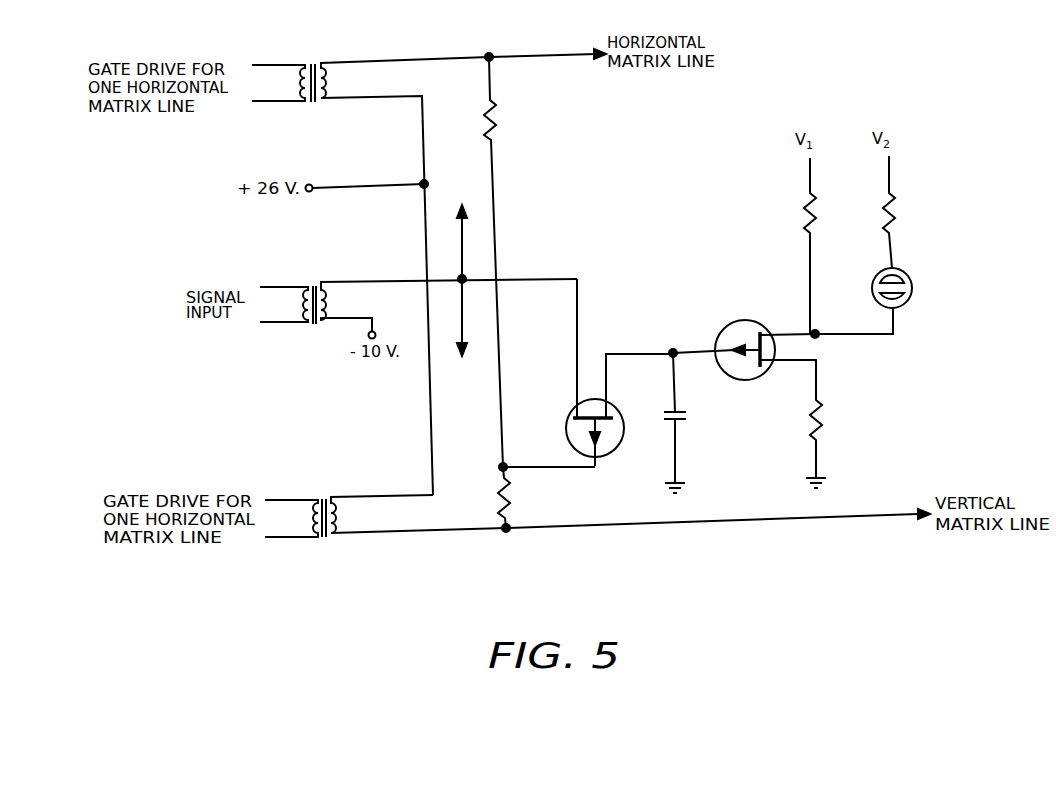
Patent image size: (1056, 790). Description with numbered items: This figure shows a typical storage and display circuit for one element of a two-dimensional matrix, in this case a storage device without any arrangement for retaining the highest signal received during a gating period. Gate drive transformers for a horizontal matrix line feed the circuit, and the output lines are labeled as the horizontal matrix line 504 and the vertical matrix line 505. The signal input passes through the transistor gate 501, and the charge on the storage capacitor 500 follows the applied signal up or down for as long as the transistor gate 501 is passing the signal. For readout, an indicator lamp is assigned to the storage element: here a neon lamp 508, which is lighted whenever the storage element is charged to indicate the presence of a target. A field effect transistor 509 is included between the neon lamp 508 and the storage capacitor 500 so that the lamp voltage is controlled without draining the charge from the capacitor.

The capacitor 500 is at (687, 417).
The transistor gate 501 is at (569, 416).
The horizontal matrix line 504 is at (515, 54).
The vertical matrix line 505 is at (580, 527).
The neon lamp 508 is at (905, 273).
The field effect transistor 509 is at (725, 327).